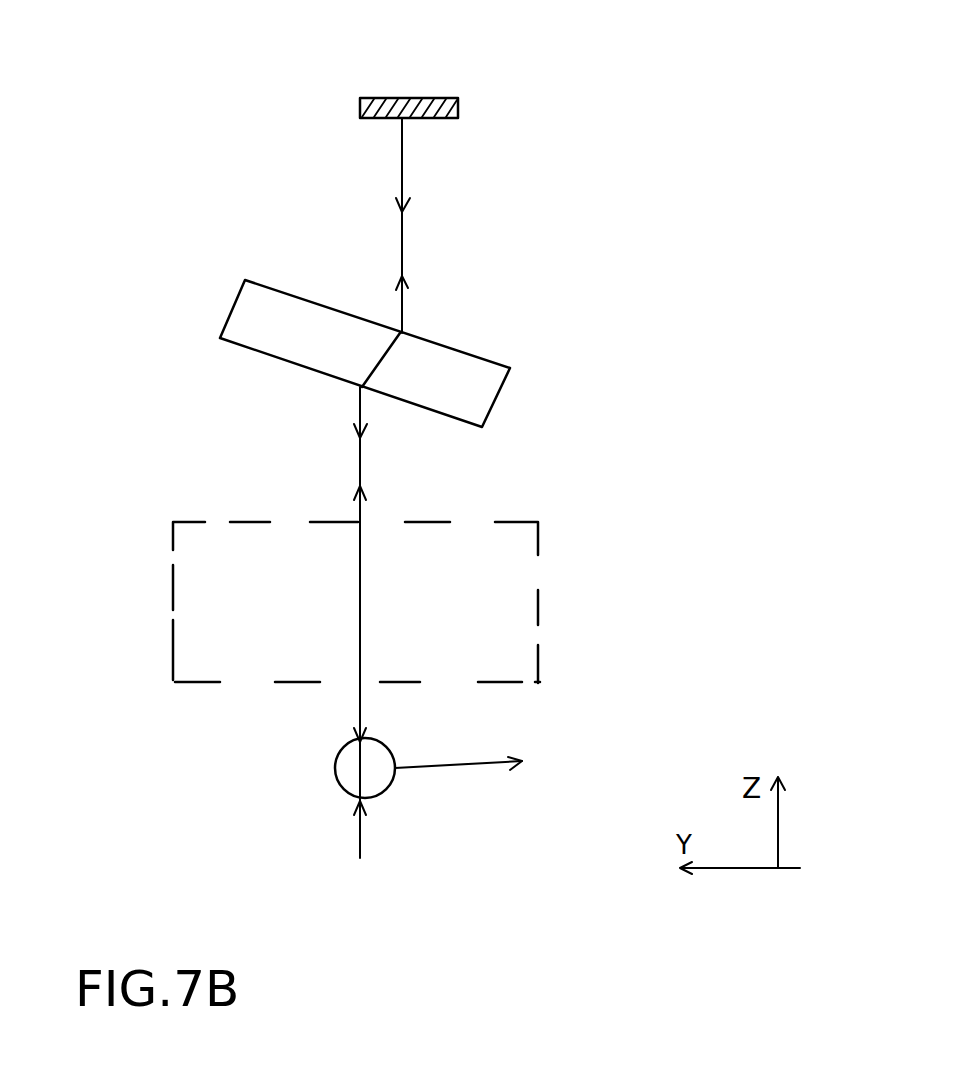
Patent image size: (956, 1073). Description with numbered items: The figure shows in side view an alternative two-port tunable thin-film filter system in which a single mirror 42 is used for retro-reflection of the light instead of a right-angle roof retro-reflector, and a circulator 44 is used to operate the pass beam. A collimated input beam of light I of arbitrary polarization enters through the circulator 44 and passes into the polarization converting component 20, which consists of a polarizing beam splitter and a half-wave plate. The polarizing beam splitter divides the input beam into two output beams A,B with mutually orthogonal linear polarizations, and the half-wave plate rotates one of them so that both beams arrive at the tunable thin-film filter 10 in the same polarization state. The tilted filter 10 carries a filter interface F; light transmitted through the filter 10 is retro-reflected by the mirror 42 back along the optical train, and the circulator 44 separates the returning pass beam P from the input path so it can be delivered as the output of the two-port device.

The mirror 42 is at (459, 107).
The tunable thin-film filter 10 is at (202, 302).
The beam splitter interface F is at (490, 386).
The output beams A and B A,B is at (358, 466).
The polarization converting component 20 is at (552, 600).
The circulator 44 is at (342, 770).
The output beam P is at (490, 766).
The input beam of light I is at (378, 837).